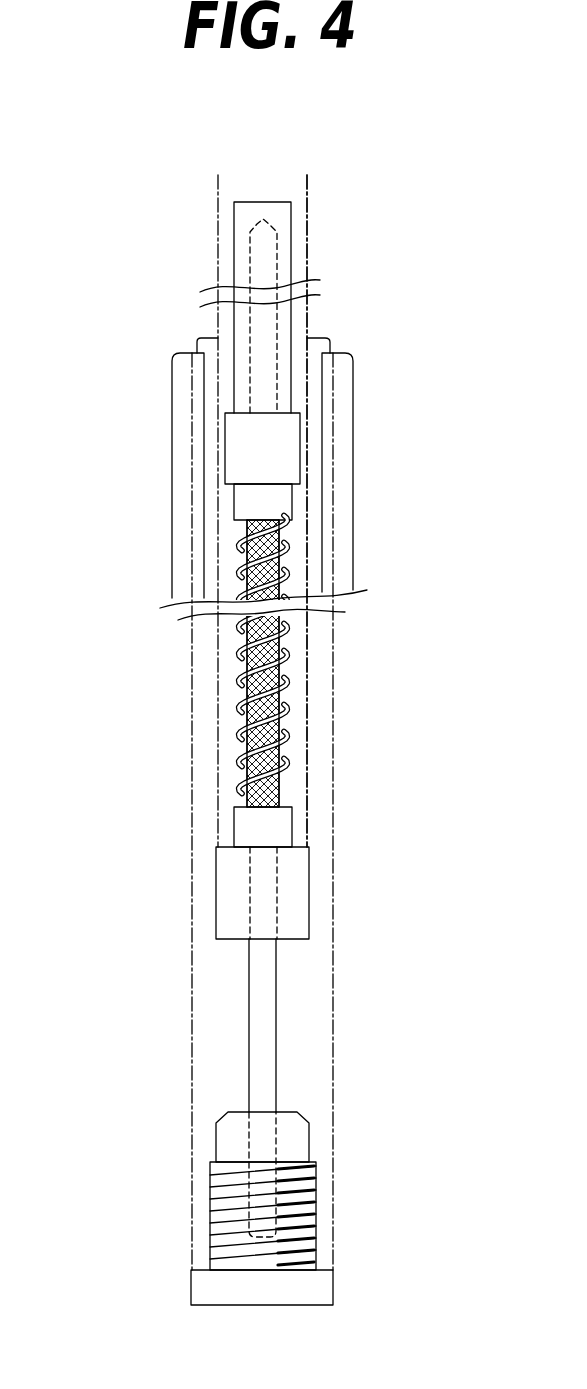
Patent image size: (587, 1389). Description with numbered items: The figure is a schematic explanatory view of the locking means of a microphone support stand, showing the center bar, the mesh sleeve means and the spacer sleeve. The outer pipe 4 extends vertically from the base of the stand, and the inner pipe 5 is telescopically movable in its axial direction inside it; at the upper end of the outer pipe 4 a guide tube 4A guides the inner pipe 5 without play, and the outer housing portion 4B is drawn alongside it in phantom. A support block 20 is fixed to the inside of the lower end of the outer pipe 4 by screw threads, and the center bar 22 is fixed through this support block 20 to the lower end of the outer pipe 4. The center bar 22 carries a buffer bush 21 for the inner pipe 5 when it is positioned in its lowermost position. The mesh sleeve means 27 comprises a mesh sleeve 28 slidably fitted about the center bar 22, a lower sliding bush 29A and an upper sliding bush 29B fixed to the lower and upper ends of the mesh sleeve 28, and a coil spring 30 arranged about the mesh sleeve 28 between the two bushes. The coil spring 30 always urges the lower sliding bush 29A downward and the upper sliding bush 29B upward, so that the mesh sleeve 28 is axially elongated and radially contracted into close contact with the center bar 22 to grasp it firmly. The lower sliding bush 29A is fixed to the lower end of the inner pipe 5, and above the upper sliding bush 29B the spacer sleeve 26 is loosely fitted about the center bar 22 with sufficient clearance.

The outer pipe 4 is at (192, 933).
The guide tube 4A is at (197, 342).
The outer housing portion 4B is at (172, 490).
The inner pipe 5 is at (308, 383).
The support block 20 is at (315, 1225).
The buffer bush 21 is at (298, 1137).
The center bar 22 is at (267, 1026).
The spacer sleeve 26 is at (291, 248).
The mesh sleeve means 27 is at (295, 743).
The mesh sleeve 28 is at (282, 658).
The lower sliding bush 29A is at (295, 893).
The upper sliding bush 29B is at (270, 452).
The coil spring 30 is at (282, 695).